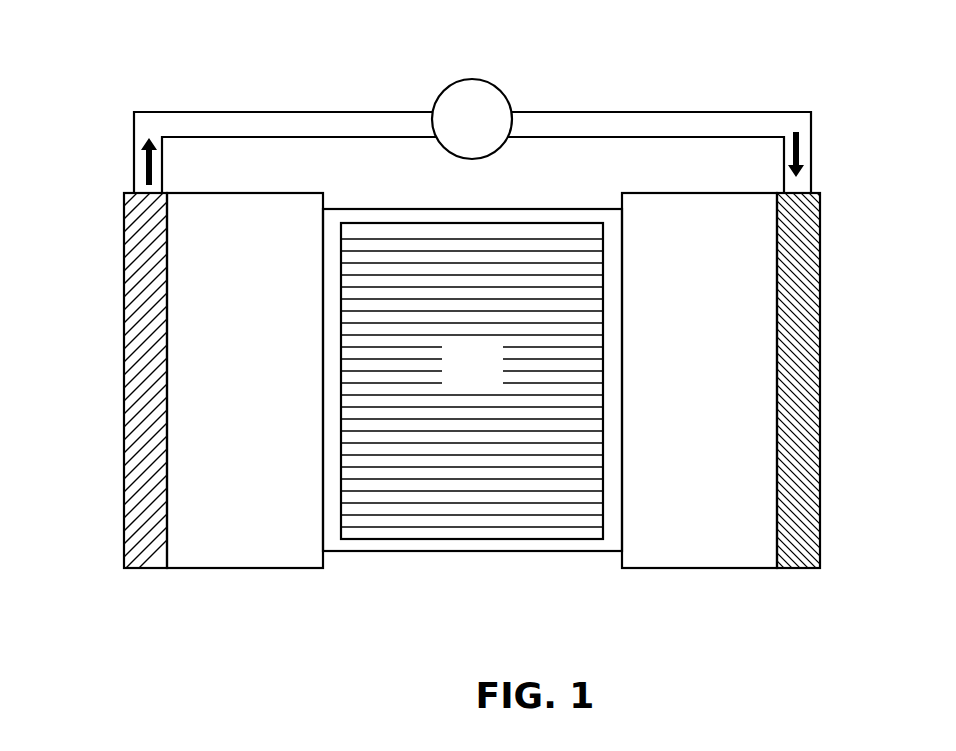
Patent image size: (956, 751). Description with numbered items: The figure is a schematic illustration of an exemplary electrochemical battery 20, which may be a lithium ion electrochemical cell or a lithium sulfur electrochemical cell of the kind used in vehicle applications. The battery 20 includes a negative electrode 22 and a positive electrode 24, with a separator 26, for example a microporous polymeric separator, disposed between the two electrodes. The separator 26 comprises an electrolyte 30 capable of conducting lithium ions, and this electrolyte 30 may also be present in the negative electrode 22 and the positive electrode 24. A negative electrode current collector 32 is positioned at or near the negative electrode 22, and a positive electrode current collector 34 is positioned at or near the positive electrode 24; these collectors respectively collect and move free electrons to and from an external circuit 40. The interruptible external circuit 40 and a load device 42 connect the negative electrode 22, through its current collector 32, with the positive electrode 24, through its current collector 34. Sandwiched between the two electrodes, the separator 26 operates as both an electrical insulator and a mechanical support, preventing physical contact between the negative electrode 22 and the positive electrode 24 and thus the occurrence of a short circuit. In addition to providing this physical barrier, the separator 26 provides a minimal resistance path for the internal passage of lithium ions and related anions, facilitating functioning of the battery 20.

The battery 20 is at (128, 52).
The negative electrode 22 is at (255, 348).
The positive electrode 24 is at (712, 343).
The separator 26 is at (470, 553).
The electrolyte 30 is at (460, 377).
The negative electrode current collector 32 is at (124, 273).
The positive electrode current collector 34 is at (822, 270).
The external circuit 40 is at (286, 111).
The load device 42 is at (460, 130).